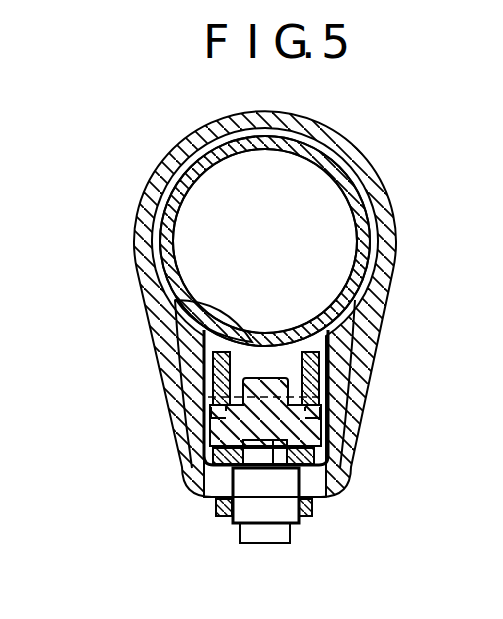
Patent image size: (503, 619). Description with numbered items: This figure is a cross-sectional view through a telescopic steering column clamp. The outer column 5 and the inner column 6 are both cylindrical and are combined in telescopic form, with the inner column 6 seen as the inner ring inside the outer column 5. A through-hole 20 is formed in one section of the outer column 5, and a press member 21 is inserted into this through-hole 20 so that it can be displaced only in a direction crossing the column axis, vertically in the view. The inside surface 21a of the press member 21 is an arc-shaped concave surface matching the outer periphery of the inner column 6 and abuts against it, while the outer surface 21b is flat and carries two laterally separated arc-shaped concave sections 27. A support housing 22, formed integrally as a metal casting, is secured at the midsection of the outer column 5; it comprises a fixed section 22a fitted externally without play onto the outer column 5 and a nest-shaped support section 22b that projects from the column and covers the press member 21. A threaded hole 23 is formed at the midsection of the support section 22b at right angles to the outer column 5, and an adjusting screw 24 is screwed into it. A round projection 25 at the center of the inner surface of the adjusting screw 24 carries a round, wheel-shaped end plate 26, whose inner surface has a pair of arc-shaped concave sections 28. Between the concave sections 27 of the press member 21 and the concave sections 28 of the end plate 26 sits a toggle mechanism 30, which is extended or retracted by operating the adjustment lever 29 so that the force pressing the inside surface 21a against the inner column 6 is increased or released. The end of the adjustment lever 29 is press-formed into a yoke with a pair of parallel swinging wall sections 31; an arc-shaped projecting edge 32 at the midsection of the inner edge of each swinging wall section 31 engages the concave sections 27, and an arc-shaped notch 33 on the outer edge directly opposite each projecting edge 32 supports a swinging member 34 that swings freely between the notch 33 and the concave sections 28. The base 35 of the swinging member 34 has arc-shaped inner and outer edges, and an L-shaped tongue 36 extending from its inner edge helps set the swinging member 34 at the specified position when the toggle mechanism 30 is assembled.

The outer column 5 is at (312, 150).
The inner column 6 is at (350, 172).
The through-hole 20 is at (376, 324).
The press member 21 is at (180, 346).
The inside surface 21a is at (165, 300).
The outer surface 21b is at (207, 405).
The support housing 22 is at (379, 194).
The fixed section 22a is at (397, 214).
The support section 22b is at (358, 428).
The threaded hole 23 is at (222, 505).
The adjusting screw 24 is at (236, 521).
The projection 25 is at (262, 476).
The end plate 26 is at (322, 497).
The concave section 27 is at (190, 388).
The concave sections 28 is at (190, 480).
The adjustment lever 29 is at (322, 400).
The toggle mechanism 30 is at (259, 372).
The swinging wall sections 31 is at (212, 413).
The projecting edge 32 is at (222, 376).
The notch 33 is at (212, 454).
The swinging member 34 is at (289, 455).
The base 35 is at (308, 512).
The tongue 36 is at (276, 376).